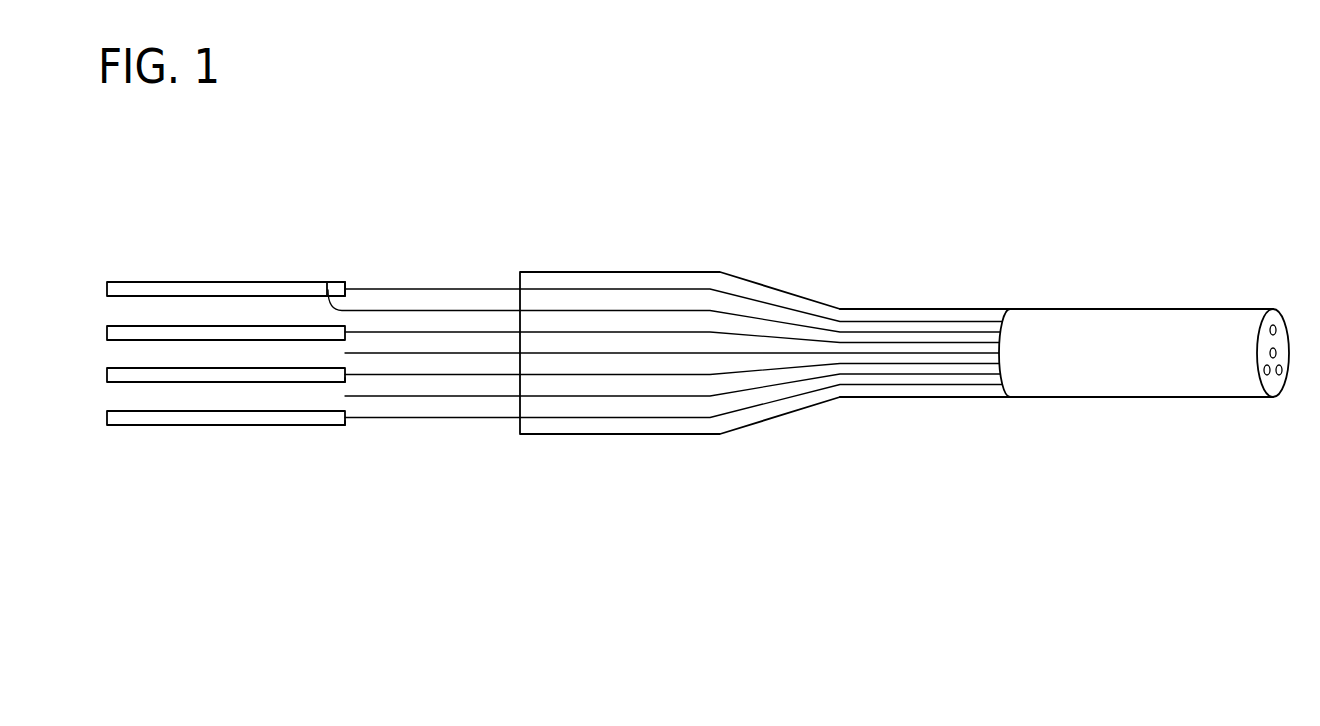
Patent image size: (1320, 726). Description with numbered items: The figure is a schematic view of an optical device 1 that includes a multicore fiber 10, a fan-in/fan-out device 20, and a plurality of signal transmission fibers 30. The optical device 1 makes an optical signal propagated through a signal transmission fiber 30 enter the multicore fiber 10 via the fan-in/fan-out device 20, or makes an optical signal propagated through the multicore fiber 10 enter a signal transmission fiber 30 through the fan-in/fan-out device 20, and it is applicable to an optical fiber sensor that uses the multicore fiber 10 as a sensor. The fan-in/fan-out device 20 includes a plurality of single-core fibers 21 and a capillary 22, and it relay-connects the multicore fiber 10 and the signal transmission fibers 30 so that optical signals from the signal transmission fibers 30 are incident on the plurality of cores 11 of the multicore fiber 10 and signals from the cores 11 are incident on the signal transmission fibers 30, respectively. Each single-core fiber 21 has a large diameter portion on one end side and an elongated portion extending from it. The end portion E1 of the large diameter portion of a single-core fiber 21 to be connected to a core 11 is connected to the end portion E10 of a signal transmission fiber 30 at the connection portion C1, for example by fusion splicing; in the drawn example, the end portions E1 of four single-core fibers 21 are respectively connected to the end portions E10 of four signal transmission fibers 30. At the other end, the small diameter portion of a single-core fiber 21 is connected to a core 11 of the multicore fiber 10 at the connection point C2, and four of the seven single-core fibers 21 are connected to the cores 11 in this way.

The optical device 1 is at (948, 176).
The multicore fiber 10 is at (1150, 318).
The cores 11 is at (1278, 353).
The fan-in/fan-out device 20 is at (760, 268).
The single-core fibers 21 is at (491, 310).
The capillary 22 is at (824, 304).
The signal transmission fibers 30 is at (231, 262).
The connection portion C1 is at (352, 268).
The connection point C2 is at (1013, 295).
The end portion E1 is at (336, 290).
The end portion E10 is at (345, 382).